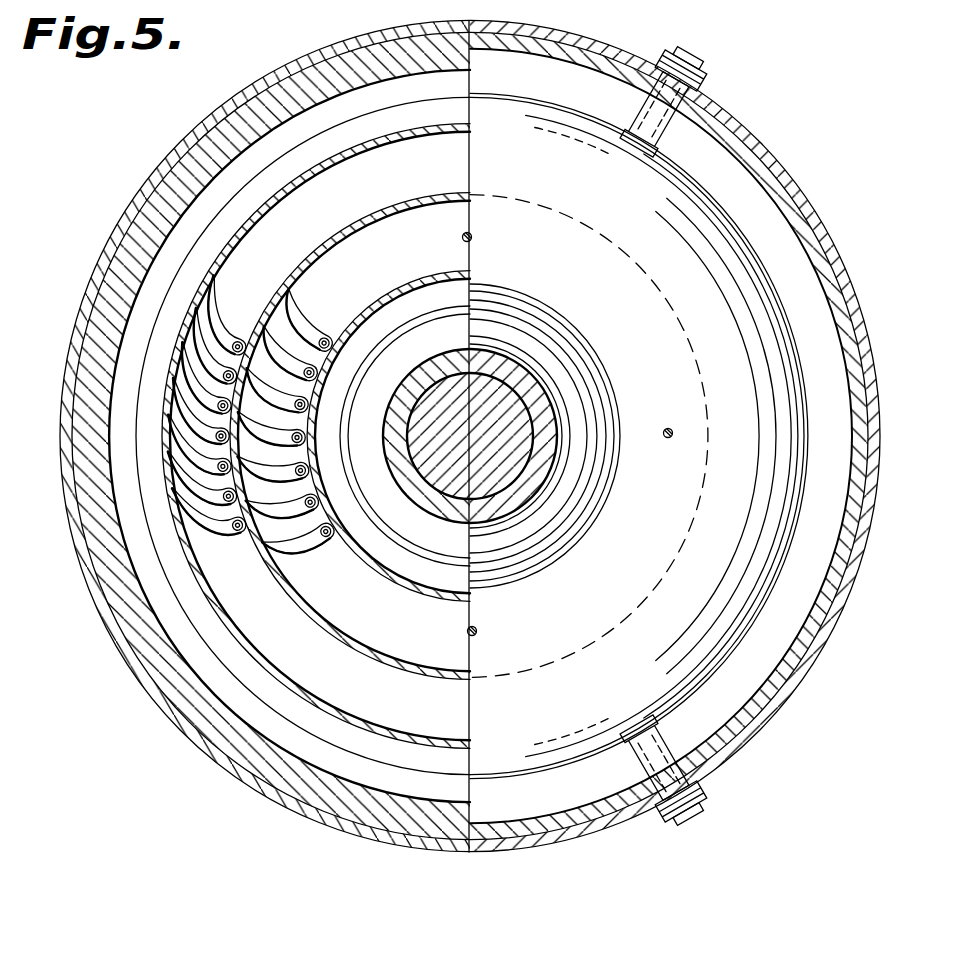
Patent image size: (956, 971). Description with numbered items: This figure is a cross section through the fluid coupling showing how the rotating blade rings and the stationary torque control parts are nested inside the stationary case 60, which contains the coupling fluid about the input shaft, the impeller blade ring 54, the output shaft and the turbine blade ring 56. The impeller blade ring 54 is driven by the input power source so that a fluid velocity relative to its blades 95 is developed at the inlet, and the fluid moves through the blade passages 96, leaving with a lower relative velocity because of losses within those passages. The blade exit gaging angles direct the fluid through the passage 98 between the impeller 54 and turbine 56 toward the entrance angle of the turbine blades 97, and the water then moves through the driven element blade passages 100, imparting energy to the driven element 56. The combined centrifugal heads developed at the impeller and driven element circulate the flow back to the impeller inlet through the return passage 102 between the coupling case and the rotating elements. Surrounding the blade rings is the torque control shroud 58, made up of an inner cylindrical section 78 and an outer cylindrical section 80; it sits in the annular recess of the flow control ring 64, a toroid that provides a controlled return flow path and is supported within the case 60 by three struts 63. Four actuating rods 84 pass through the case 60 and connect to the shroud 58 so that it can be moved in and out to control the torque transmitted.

The impeller blade ring 54 is at (392, 282).
The turbine blade ring 56 is at (332, 232).
The torque control shroud 58 is at (287, 439).
The stationary case 60 is at (793, 176).
The struts 63 is at (663, 128).
The flow control ring 64 is at (753, 293).
The inner cylindrical section 78 is at (456, 596).
The outer cylindrical section 80 is at (321, 616).
The actuating rods 84 is at (472, 238).
The impeller blades 95 is at (318, 558).
The blade passages 96 is at (303, 583).
The turbine blades 97 is at (227, 527).
The passage 98 is at (250, 348).
The driven element blade passages 100 is at (185, 338).
The return passage 102 is at (202, 248).